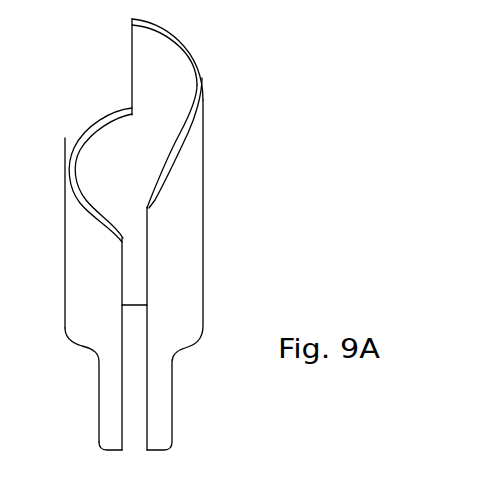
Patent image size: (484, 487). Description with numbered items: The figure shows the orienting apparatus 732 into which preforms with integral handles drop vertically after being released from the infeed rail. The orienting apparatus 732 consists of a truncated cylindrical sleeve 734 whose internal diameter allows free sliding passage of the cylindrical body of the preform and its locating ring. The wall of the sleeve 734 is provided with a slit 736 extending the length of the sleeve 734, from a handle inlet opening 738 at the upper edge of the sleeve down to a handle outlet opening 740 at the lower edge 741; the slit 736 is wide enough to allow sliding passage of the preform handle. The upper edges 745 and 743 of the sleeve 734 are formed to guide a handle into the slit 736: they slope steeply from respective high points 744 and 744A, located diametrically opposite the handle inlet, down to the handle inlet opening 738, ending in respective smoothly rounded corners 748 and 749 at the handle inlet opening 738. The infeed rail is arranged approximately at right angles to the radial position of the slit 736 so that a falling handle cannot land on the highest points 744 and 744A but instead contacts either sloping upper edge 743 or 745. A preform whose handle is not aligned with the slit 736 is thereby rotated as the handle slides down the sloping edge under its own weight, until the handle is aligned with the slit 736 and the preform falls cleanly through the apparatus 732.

The orienting apparatus 732 is at (236, 228).
The high point 744 is at (128, 24).
The high point 744A is at (117, 104).
The upper edge 745 is at (199, 105).
The smoothly rounded corner 749 is at (164, 177).
The upper edge 743 is at (70, 152).
The smoothly rounded corner 748 is at (105, 215).
The truncated cylindrical sleeve 734 is at (80, 327).
The handle outlet opening 740 is at (131, 452).
The slit 736 is at (129, 370).
The handle inlet opening 738 is at (134, 223).
The lower edge 741 is at (169, 448).